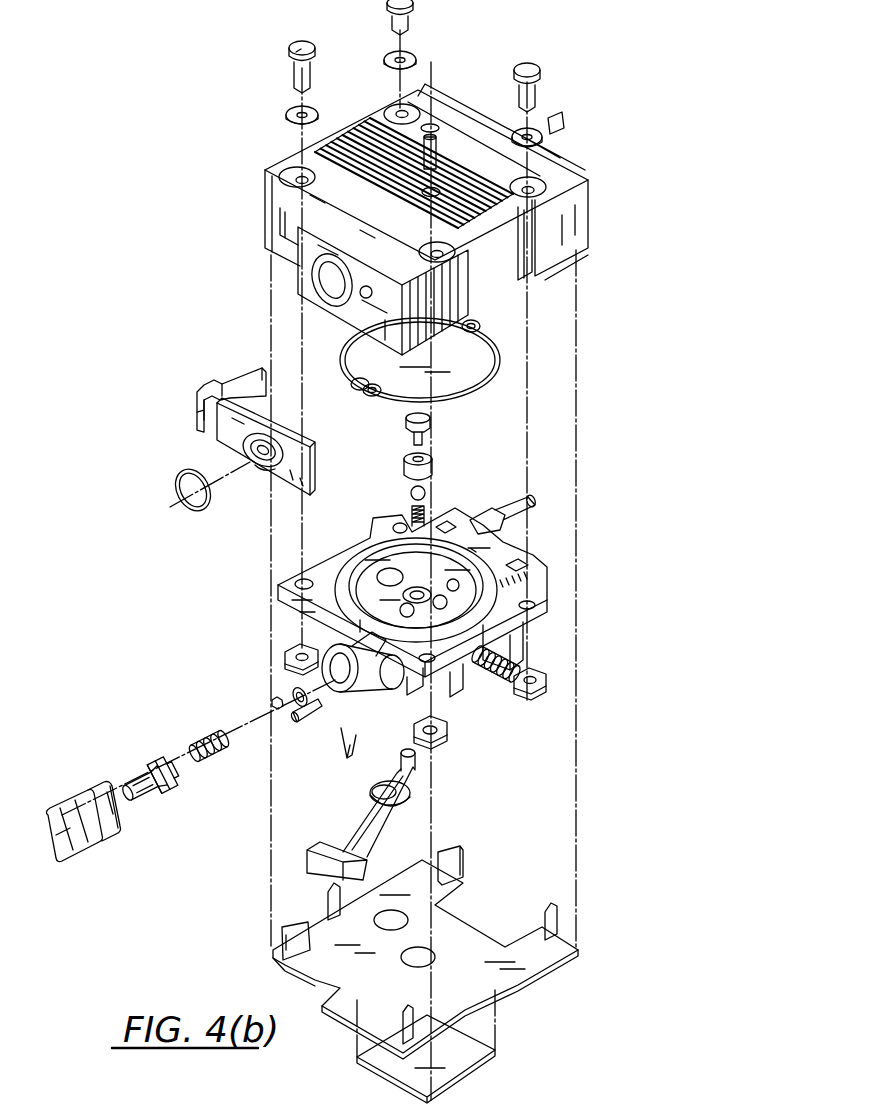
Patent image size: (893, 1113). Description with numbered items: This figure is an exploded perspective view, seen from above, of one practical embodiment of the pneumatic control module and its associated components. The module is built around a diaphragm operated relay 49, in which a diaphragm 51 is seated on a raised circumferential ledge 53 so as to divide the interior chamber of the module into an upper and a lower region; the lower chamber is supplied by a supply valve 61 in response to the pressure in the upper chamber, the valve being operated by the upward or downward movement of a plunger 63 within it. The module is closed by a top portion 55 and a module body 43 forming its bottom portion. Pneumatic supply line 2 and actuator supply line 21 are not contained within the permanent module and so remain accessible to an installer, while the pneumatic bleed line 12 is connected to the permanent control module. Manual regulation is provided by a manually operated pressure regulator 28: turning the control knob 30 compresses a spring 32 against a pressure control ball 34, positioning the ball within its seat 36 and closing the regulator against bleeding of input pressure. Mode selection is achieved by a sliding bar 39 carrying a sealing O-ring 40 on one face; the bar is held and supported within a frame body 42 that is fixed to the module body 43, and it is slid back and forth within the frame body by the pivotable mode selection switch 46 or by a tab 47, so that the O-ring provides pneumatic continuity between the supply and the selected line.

The pneumatic supply line 2 is at (522, 684).
The pneumatic bleed line 12 is at (519, 497).
The actuator supply line 21 is at (496, 679).
The manually operated pressure regulator 28 is at (147, 751).
The control knob 30 is at (56, 802).
The spring 32 is at (208, 735).
The pressure control ball 34 is at (275, 701).
The seat 36 is at (293, 688).
The sliding bar 39 is at (220, 440).
The sealing O-ring 40 is at (176, 478).
The frame body 42 is at (540, 580).
The module body 43 is at (562, 611).
The mode selection switch 46 is at (424, 806).
The tab 47 is at (243, 380).
The diaphragm operated relay 49 is at (257, 288).
The diaphragm 51 is at (467, 400).
The raised circumferential ledge 53 is at (360, 547).
The top portion of the module 55 is at (357, 128).
The supply valve 61 is at (402, 465).
The plunger 63 is at (405, 422).